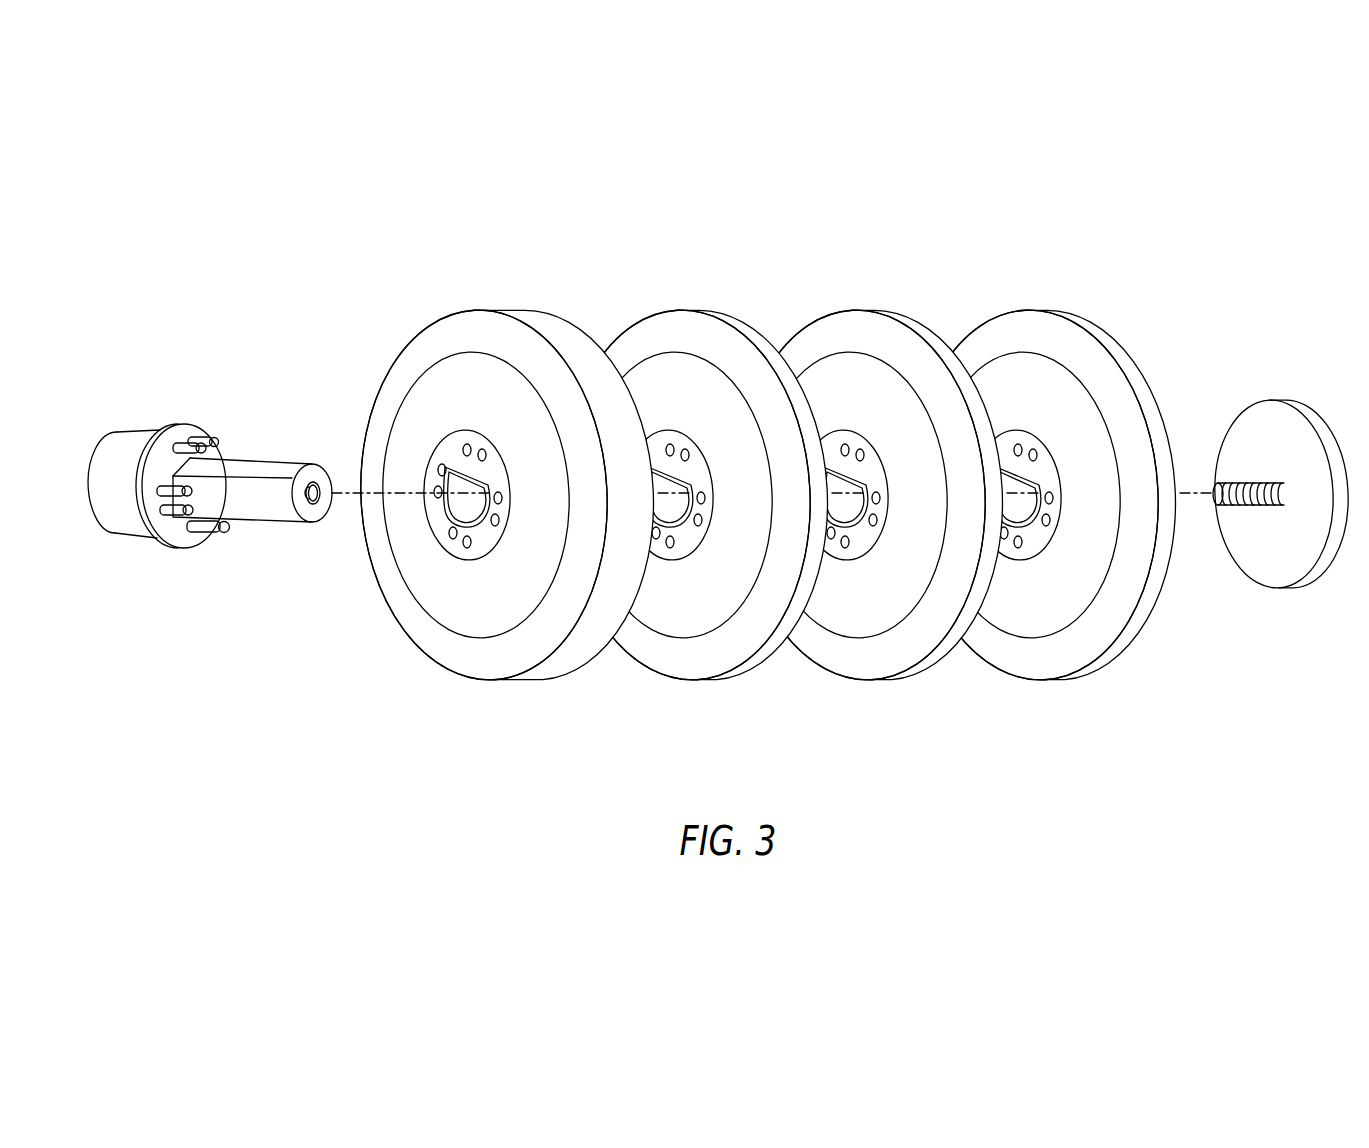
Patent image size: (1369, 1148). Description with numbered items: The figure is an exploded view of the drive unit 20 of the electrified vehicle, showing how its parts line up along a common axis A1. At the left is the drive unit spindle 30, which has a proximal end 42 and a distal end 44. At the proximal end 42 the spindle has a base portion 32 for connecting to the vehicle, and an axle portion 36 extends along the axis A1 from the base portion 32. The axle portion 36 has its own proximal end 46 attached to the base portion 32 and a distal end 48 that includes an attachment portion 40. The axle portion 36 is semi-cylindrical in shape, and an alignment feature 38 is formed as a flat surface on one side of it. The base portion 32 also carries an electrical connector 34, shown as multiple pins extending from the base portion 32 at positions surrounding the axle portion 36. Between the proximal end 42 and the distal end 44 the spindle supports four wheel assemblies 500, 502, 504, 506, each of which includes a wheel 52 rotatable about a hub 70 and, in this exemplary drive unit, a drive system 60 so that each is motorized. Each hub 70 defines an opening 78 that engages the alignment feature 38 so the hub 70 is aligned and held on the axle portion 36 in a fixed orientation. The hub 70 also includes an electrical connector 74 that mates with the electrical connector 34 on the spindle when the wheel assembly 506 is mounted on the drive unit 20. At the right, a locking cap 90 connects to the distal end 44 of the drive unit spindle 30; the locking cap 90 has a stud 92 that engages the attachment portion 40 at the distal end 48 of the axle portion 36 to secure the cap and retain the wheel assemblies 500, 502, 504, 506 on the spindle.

The drive unit 20 is at (311, 197).
The drive unit spindle 30 is at (125, 558).
The base portion 32 is at (132, 440).
The electrical connector 34 is at (215, 533).
The axle portion 36 is at (263, 543).
The alignment feature 38 is at (260, 467).
The attachment portion 40 is at (322, 515).
The proximal end 42 is at (96, 455).
The distal end 44 is at (322, 581).
The proximal end 46 is at (160, 460).
The distal end 48 is at (333, 503).
The wheel 52 is at (473, 662).
The drive system 60 is at (462, 582).
The hub 70 is at (455, 443).
The electrical connector 74 is at (470, 447).
The opening 78 is at (475, 515).
The locking cap 90 is at (1297, 402).
The stud 92 is at (1250, 503).
The wheel assembly 500 is at (1104, 660).
The wheel assembly 502 is at (932, 660).
The wheel assembly 504 is at (757, 662).
The wheel assembly 506 is at (567, 662).
The axis A1 is at (354, 497).